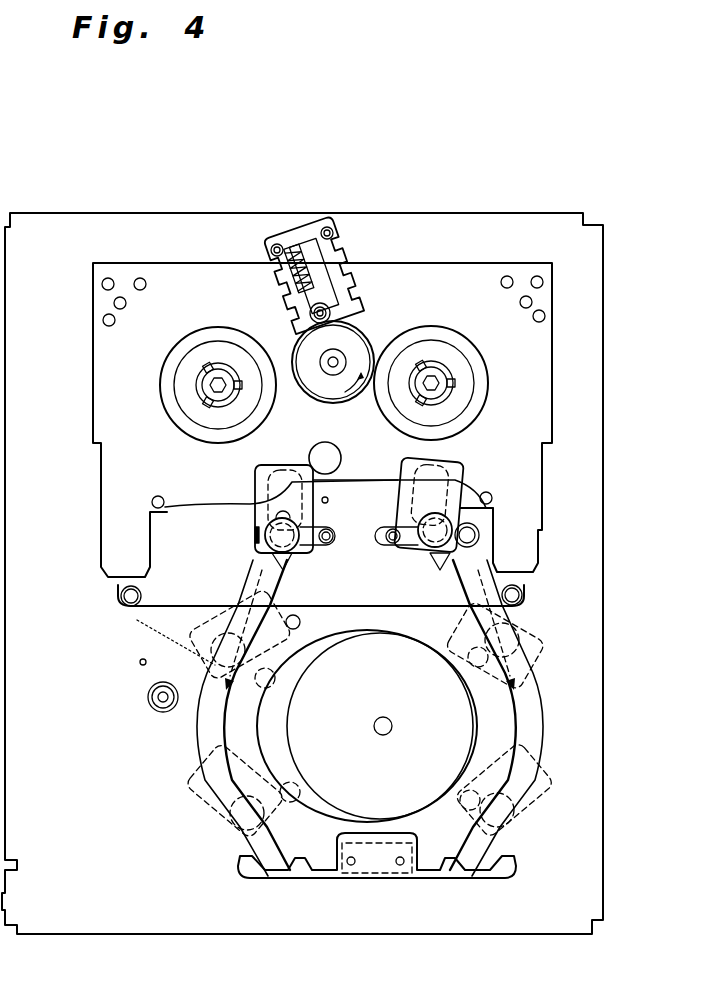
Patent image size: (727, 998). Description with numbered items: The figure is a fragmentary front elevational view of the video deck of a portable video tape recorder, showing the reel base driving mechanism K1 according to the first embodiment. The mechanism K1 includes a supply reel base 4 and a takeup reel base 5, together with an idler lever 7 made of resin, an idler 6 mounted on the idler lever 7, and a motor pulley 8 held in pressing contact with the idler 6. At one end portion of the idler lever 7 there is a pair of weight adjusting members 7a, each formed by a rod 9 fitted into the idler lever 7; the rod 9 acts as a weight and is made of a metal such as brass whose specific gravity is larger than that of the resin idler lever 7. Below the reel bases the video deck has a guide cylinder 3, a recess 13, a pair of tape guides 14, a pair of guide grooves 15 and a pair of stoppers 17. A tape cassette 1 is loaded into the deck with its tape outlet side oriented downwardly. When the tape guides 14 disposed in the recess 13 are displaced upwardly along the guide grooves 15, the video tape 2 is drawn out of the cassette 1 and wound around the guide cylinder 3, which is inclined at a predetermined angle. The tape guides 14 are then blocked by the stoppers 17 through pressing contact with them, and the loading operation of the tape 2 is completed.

The tape cassette 1 is at (103, 409).
The video tape 2 is at (175, 604).
The guide cylinder 3 is at (408, 760).
The supply reel base 4 is at (482, 400).
The takeup reel base 5 is at (164, 385).
The idler 6 is at (295, 375).
The idler lever 7 is at (360, 228).
The weight adjusting members 7a is at (274, 244).
The motor pulley 8 is at (298, 328).
The rod 9 is at (326, 231).
The recess 13 is at (357, 537).
The tape guides 14 is at (256, 516).
The guide grooves 15 is at (192, 745).
The stoppers 17 is at (250, 868).
The reel base driving mechanism K1 is at (372, 243).